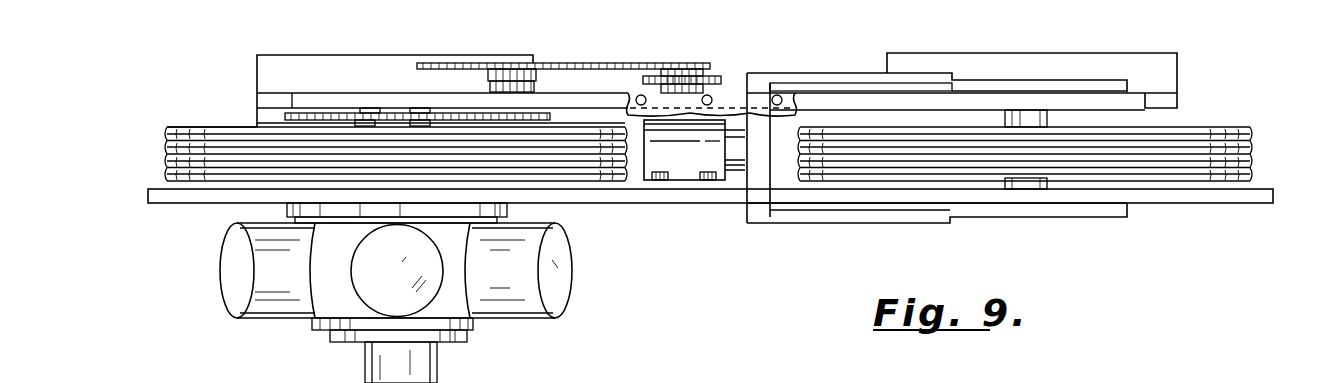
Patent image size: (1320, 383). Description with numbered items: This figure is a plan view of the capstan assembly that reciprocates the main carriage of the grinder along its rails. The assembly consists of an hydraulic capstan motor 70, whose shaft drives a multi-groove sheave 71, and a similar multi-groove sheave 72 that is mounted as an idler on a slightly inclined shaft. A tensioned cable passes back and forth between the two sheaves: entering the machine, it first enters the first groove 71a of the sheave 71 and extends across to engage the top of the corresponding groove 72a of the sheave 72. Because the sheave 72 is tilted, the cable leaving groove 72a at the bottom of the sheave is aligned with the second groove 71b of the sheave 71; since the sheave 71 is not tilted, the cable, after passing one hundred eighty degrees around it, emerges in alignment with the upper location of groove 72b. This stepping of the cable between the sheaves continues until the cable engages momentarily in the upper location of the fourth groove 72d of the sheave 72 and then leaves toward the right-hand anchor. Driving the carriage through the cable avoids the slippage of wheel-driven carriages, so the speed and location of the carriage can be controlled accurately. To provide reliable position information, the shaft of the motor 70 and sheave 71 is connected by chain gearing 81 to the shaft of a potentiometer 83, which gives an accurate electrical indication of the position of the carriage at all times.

The hydraulic capstan motor 70 is at (228, 281).
The multi-groove sheave 71 is at (200, 120).
The first groove 71a is at (170, 132).
The second groove 71b is at (168, 148).
The multi-groove sheave 72 is at (1198, 123).
The groove 72a is at (1252, 128).
The groove 72b is at (1252, 147).
The fourth groove 72d is at (1255, 177).
The chain gearing 81 is at (462, 112).
The potentiometer 83 is at (678, 90).